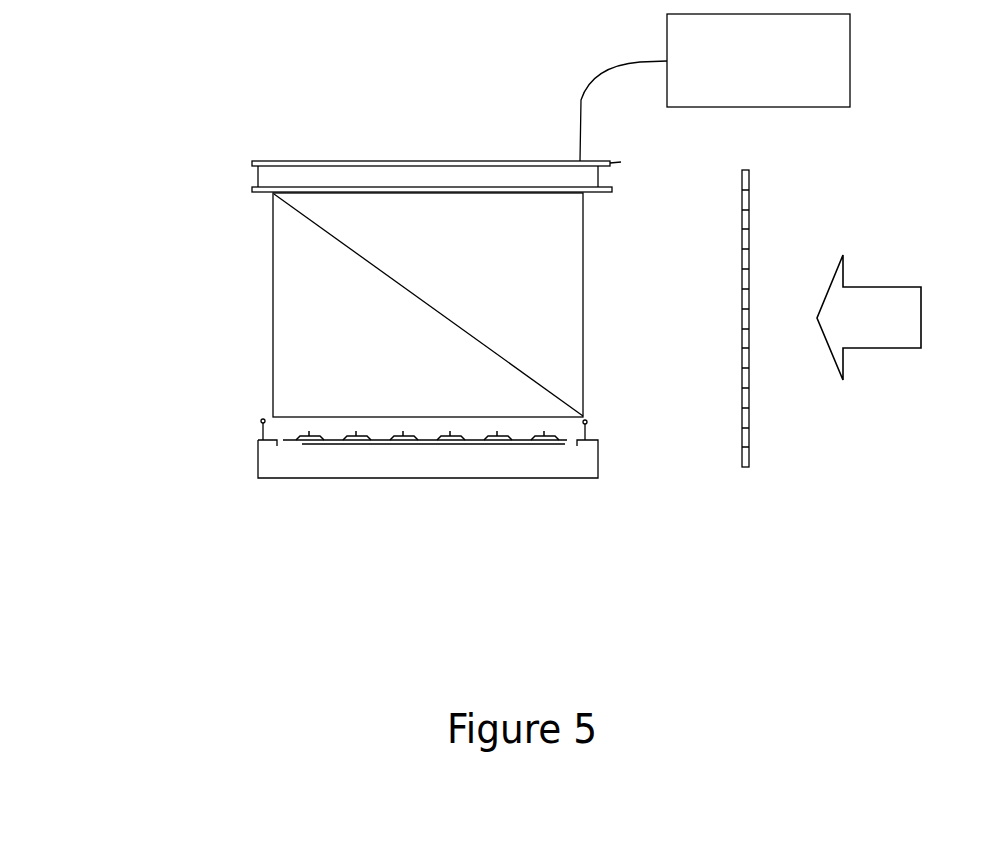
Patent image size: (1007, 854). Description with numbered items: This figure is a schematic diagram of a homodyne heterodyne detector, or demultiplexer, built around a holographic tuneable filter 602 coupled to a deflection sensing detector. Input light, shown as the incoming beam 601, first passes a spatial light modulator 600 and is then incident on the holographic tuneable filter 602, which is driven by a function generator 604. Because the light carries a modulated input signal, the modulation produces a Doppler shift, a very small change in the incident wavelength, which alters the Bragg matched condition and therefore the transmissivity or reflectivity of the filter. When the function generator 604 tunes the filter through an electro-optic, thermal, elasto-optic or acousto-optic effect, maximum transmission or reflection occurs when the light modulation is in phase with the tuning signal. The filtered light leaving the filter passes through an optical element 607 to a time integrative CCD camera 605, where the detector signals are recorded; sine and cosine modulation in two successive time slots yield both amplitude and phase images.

The spatial light modulator (SLM) 600 is at (755, 448).
The incoming light beam 601 is at (866, 320).
The holographic tuneable filter 602 is at (350, 181).
The function generator 604 is at (812, 60).
The CCD camera 605 is at (258, 463).
The optical element 607 is at (273, 307).